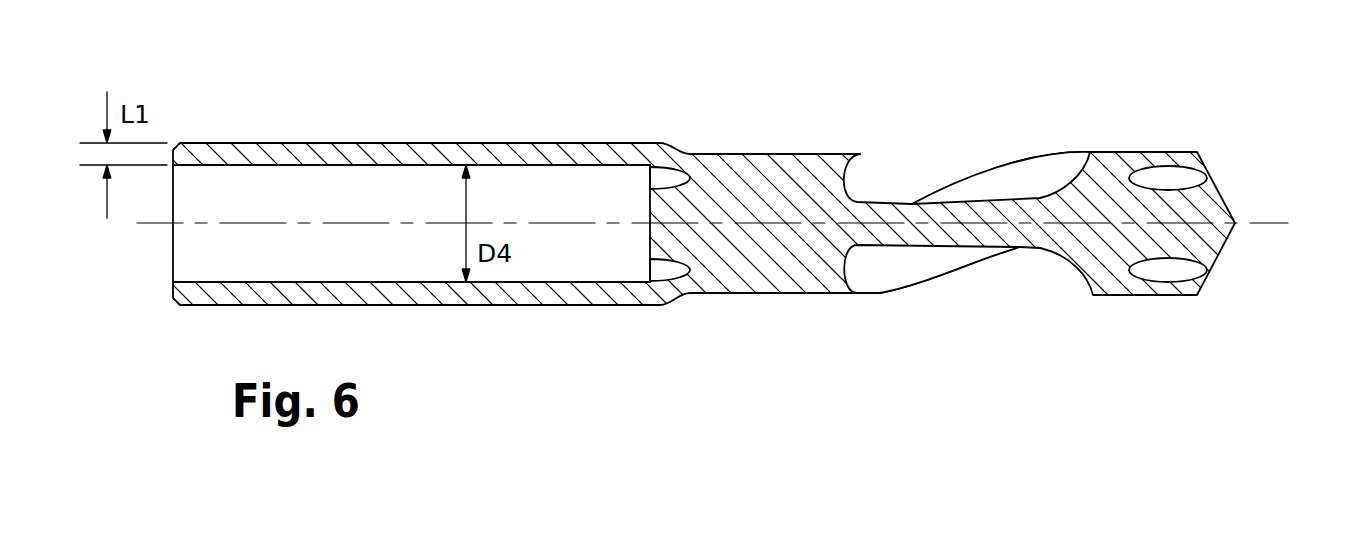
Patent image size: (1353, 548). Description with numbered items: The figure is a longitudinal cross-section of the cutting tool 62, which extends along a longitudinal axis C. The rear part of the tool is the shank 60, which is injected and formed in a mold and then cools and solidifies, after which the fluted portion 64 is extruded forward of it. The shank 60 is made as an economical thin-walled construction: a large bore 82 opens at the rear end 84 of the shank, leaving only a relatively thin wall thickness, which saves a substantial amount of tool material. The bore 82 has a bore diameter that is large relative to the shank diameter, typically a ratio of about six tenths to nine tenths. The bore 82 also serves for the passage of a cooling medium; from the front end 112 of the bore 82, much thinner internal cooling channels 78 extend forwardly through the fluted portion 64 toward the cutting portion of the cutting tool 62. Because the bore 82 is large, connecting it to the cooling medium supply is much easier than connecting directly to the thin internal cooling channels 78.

The shank 60 is at (380, 143).
The cutting tool 62 is at (1180, 113).
The fluted portion 64 is at (1023, 192).
The internal cooling channels 78 is at (670, 178).
The bore 82 is at (212, 243).
The rear end 84 is at (165, 268).
The front end of the bore 112 is at (650, 207).
The longitudinal axis C is at (1250, 225).